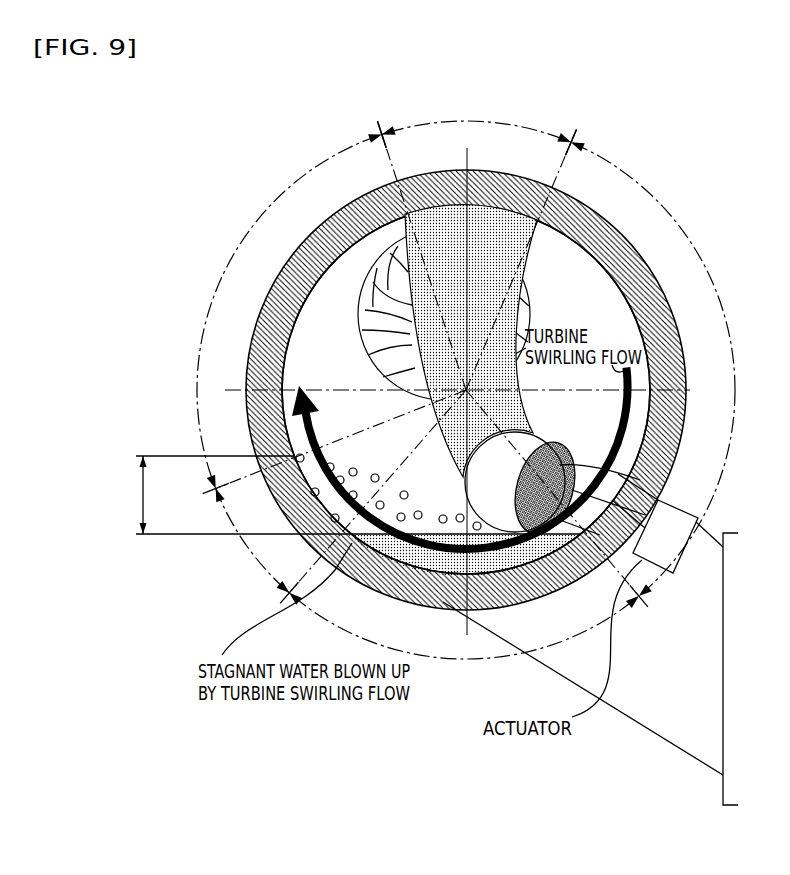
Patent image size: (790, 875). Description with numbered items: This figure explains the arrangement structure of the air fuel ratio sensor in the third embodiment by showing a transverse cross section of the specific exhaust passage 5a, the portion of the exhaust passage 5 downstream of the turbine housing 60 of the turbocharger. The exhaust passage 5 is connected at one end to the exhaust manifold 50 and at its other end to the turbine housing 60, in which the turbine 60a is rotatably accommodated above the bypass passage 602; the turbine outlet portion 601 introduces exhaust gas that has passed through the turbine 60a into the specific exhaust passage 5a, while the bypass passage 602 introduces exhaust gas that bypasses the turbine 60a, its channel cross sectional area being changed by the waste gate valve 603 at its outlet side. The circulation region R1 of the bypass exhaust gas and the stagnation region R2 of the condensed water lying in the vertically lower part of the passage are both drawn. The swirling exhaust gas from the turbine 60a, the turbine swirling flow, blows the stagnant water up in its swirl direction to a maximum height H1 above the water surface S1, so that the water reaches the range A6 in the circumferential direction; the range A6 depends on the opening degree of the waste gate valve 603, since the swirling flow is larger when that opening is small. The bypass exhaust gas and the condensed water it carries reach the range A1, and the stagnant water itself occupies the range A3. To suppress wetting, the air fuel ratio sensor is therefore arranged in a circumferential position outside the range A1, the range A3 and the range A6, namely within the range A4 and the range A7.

The turbine housing 60 is at (638, 275).
The specific exhaust passage 5a is at (623, 330).
The turbine 60a is at (358, 310).
The circulation region R1 is at (487, 290).
The turbine outlet portion 601 is at (348, 348).
The bypass passage 602 is at (537, 437).
The waste gate valve 603 is at (650, 480).
The stagnation region R2 is at (413, 560).
The water surface of the stagnant water S1 is at (426, 530).
The maximum blow-up height H1 is at (204, 495).
The range A1 is at (461, 121).
The range A7 is at (283, 195).
The range A4 is at (646, 190).
The range A6 is at (252, 548).
The range A3 is at (464, 658).
The exhaust passage 5 is at (690, 723).
The exhaust manifold 50 is at (722, 782).